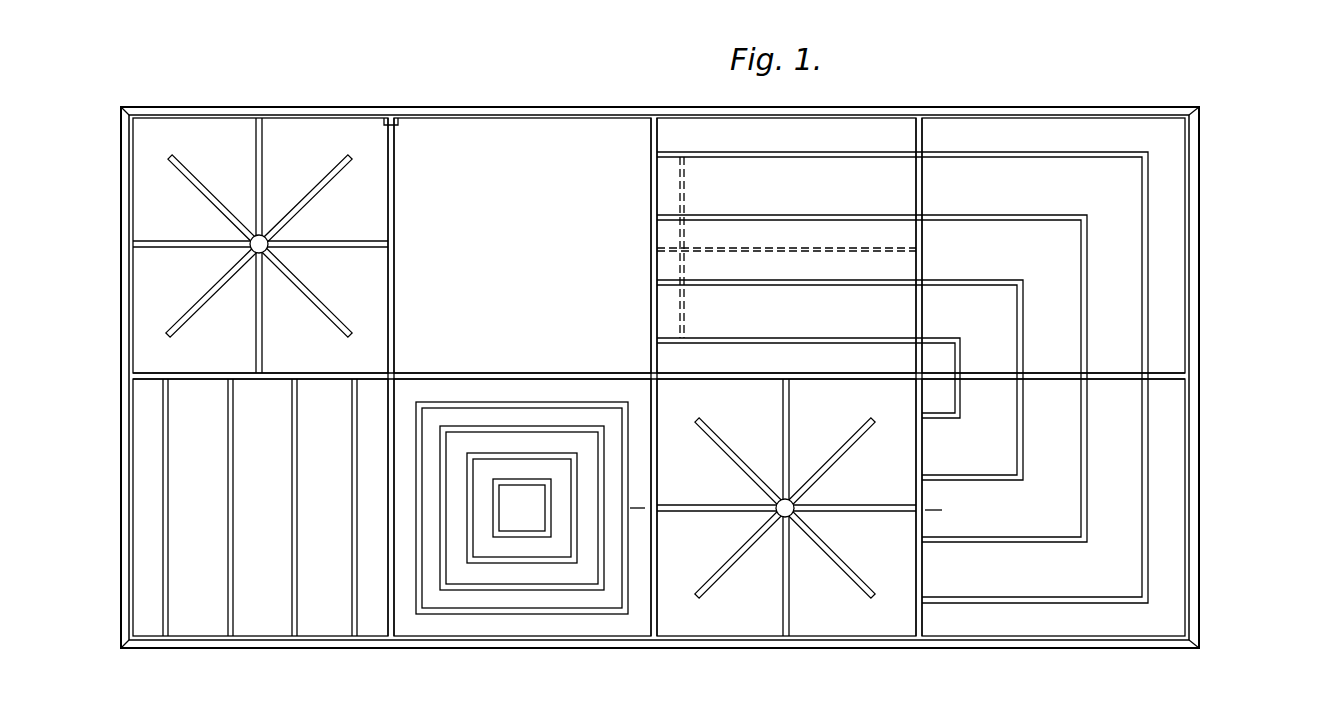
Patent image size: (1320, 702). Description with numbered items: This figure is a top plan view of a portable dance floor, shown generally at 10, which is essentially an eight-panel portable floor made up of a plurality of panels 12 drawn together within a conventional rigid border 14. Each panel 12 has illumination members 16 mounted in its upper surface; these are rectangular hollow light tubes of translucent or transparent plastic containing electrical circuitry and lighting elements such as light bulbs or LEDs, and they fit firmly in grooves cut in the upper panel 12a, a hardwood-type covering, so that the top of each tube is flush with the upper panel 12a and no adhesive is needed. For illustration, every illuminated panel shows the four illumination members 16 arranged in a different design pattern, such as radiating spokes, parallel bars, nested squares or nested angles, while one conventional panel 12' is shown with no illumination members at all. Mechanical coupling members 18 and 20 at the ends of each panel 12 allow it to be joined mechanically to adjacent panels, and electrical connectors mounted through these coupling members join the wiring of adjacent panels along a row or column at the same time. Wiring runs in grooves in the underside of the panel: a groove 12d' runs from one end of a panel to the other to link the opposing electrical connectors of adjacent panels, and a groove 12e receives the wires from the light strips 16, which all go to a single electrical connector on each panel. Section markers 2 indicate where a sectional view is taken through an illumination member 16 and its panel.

The section line 2 is at (637, 514).
The portable floor 10 is at (1214, 268).
The panel 12 is at (659, 378).
The conventional panel 12' is at (522, 218).
The upper panel 12a is at (447, 625).
The hidden bar 12d' is at (786, 264).
The groove 12e is at (684, 315).
The rigid border 14 is at (1195, 167).
The illumination members 16 is at (255, 158).
The mechanical coupling member 18 is at (396, 137).
The mechanical coupling member 20 is at (388, 127).